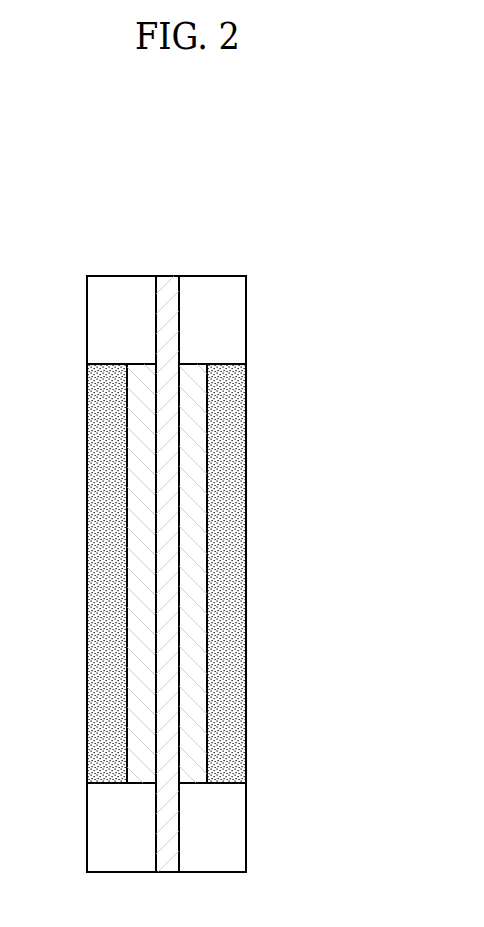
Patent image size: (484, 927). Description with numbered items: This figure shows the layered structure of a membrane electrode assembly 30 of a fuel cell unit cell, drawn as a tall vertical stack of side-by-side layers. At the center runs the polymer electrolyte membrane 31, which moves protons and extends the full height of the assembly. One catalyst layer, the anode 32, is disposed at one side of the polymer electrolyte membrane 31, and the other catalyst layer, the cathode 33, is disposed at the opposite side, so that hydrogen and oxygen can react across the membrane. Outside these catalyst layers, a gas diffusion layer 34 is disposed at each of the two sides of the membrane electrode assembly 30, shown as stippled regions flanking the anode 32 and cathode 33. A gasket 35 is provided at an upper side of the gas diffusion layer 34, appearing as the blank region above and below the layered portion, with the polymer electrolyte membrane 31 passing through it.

The membrane electrode assembly 30 is at (197, 230).
The polymer electrolyte membrane 31 is at (167, 445).
The anode 32 is at (193, 568).
The cathode 33 is at (135, 478).
The gas diffusion layer 34 is at (100, 408).
The gasket 35 is at (228, 317).